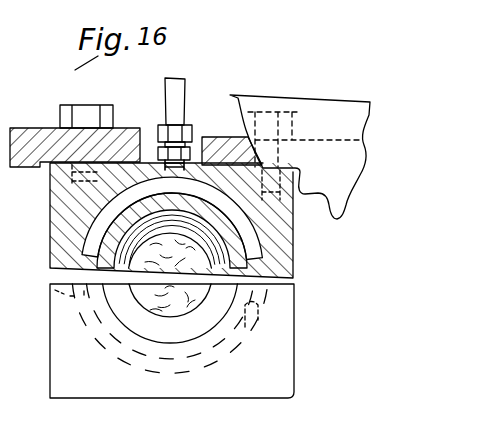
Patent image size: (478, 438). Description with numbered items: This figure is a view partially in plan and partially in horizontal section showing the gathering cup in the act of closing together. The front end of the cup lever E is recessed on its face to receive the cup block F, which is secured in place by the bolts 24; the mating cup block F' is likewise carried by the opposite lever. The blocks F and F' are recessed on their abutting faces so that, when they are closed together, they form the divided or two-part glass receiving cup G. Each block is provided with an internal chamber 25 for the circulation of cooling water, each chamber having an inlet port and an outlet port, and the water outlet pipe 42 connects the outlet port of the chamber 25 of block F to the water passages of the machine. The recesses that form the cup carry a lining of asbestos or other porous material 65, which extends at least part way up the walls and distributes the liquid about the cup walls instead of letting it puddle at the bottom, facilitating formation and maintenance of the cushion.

The bolt 24 is at (113, 118).
The water outlet pipe 42 is at (185, 115).
The internal chamber 25 is at (35, 248).
The lining of porous material 65 is at (105, 269).
The cup lever E is at (300, 157).
The cup block F is at (157, 220).
The cup block F' is at (152, 341).
The glass receiving cup G is at (222, 317).